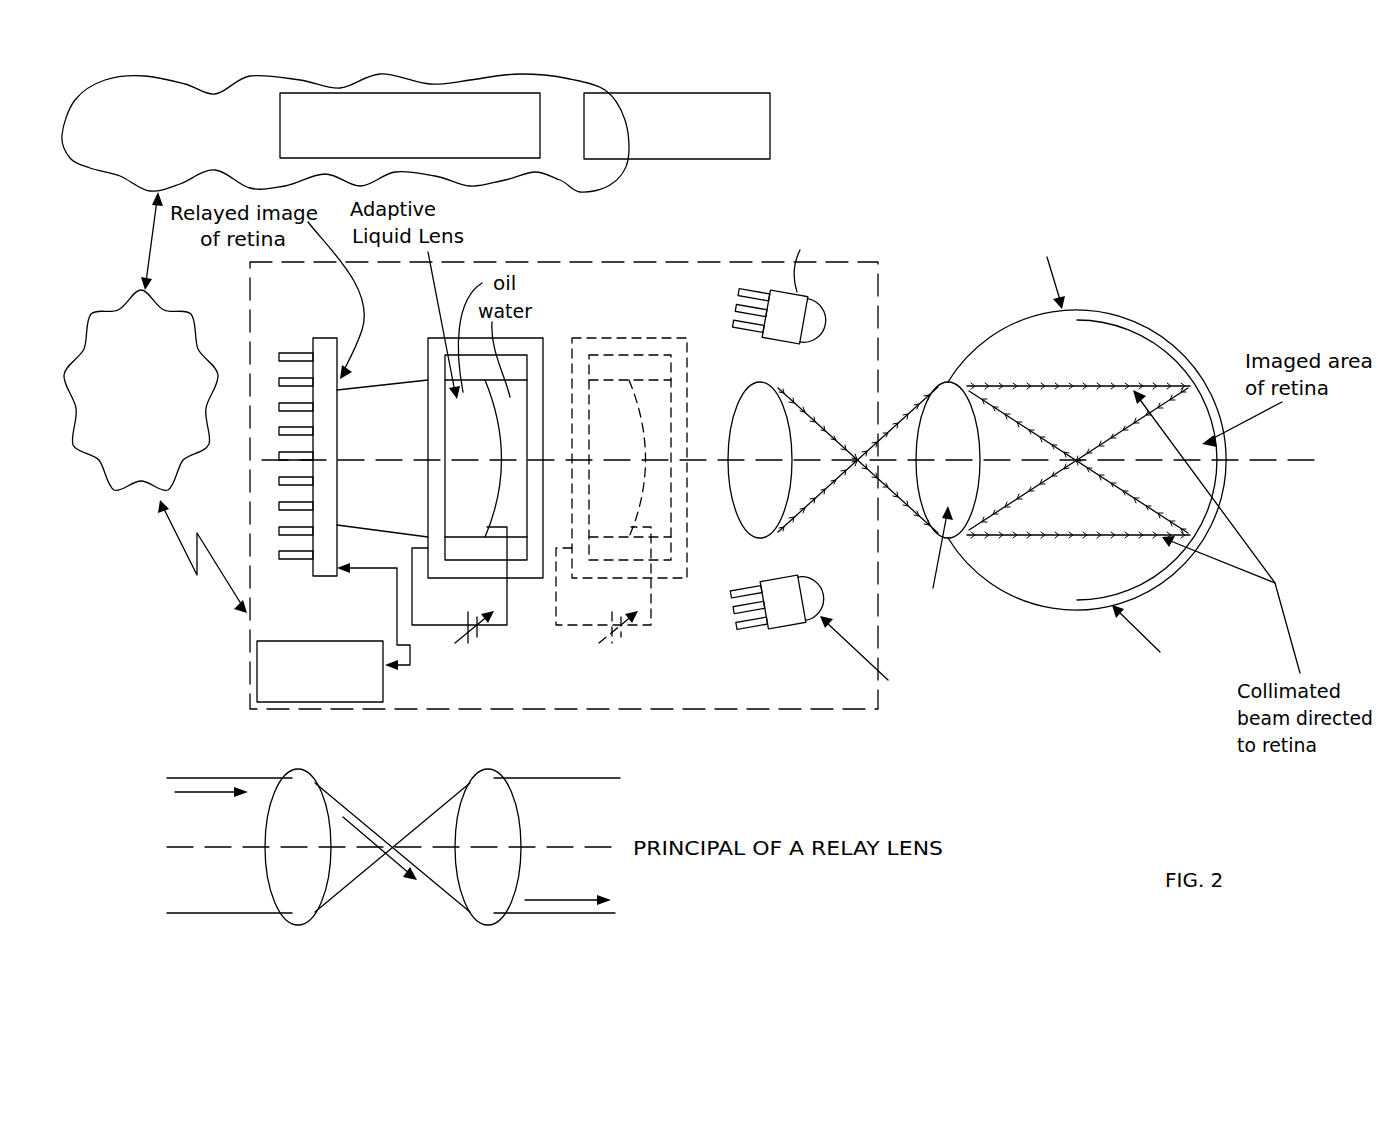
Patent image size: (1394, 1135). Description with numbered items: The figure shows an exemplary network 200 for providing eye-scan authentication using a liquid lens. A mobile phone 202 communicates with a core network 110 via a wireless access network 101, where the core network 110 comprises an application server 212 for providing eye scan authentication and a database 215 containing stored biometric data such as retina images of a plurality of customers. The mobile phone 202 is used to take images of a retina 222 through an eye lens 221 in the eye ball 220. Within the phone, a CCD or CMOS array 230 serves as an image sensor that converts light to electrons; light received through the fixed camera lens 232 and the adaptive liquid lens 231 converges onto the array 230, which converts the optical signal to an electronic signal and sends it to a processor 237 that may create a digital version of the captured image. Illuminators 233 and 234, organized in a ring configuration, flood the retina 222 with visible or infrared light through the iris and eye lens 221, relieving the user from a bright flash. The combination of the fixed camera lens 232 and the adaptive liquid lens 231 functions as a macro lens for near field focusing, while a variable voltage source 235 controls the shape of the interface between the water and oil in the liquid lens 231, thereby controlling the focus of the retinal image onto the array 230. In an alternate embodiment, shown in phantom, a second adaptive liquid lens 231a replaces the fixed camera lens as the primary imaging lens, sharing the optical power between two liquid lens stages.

The core network 110 is at (183, 150).
The application server 212 is at (578, 193).
The database 215 is at (770, 125).
The wireless access network 101 is at (158, 438).
The mobile phone 202 is at (250, 665).
The CCD or CMOS array 230 is at (325, 337).
The adaptive liquid lens 231 is at (432, 338).
The second adaptive liquid lens 231a is at (632, 338).
The fixed camera lens 232 is at (775, 386).
The illuminator 233 is at (815, 340).
The illuminator 234 is at (805, 578).
The variable voltage source 235 is at (480, 632).
The processor 237 is at (338, 698).
The eye ball 220 is at (1115, 316).
The eye lens 221 is at (945, 393).
The retina 222 is at (1162, 350).
The network 200 is at (1216, 825).